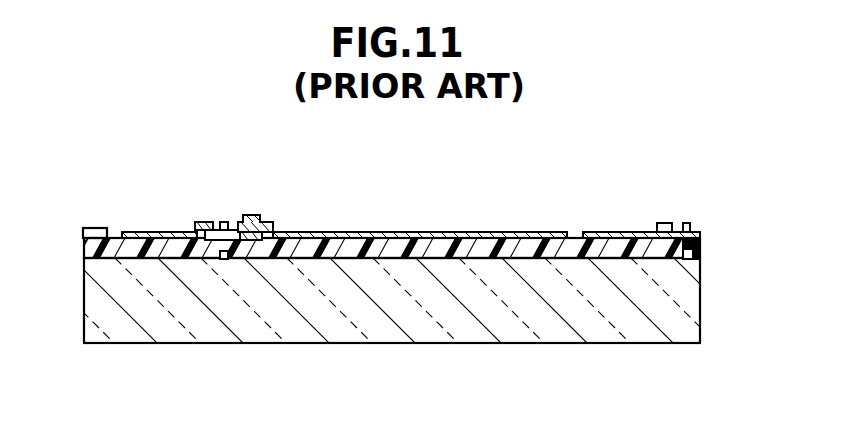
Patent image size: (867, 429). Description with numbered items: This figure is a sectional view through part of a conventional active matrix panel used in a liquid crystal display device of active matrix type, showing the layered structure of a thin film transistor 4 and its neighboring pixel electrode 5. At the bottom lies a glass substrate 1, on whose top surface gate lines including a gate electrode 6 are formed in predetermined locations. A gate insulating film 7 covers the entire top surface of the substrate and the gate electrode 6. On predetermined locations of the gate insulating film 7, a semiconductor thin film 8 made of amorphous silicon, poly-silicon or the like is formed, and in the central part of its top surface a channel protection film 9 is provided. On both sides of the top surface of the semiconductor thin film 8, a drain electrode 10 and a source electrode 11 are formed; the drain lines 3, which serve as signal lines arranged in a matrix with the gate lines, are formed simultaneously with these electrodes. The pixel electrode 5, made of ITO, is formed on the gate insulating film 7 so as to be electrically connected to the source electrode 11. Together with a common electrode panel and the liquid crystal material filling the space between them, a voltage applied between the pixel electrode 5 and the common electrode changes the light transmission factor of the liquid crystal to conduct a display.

The glass substrate 1 is at (477, 338).
The drain lines 3 is at (142, 232).
The thin film transistor 4 is at (241, 209).
The pixel electrode 5 is at (423, 232).
The gate electrode 6 is at (223, 262).
The gate insulating film 7 is at (385, 250).
The semiconductor thin film 8 is at (206, 236).
The channel protection film 9 is at (223, 222).
The drain electrode 10 is at (200, 222).
The source electrode 11 is at (252, 242).